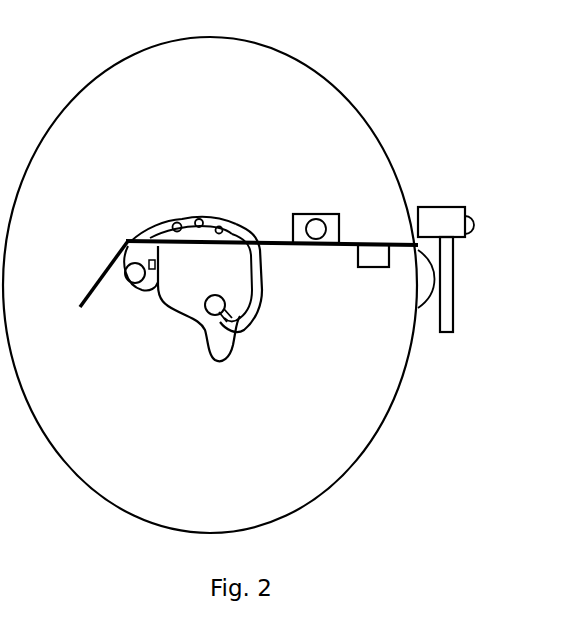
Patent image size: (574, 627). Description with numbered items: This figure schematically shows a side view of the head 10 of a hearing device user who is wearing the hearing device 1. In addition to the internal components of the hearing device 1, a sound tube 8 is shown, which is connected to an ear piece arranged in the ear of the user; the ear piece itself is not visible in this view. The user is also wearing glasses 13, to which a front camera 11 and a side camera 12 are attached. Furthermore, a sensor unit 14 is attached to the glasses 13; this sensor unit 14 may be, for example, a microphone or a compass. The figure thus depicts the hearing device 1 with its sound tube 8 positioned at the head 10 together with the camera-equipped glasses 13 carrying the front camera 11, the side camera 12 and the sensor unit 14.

The hearing device 1 is at (163, 221).
The sound tube 8 is at (262, 280).
The head 10 is at (380, 118).
The front camera 11 is at (446, 206).
The side camera 12 is at (307, 212).
The glasses 13 is at (456, 310).
The sensor unit 14 is at (375, 270).